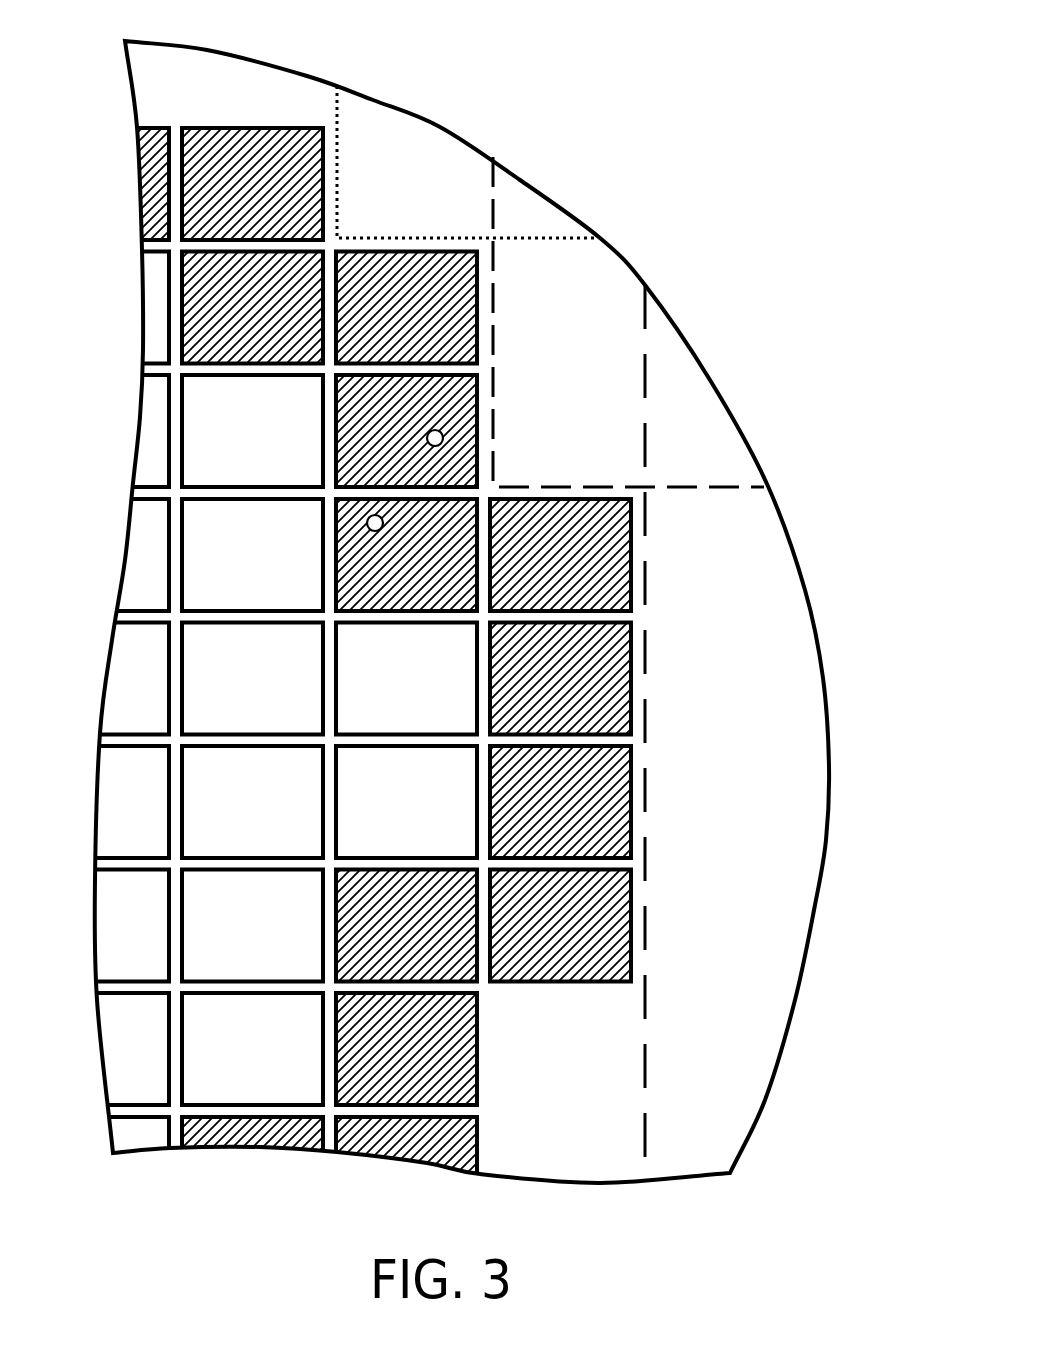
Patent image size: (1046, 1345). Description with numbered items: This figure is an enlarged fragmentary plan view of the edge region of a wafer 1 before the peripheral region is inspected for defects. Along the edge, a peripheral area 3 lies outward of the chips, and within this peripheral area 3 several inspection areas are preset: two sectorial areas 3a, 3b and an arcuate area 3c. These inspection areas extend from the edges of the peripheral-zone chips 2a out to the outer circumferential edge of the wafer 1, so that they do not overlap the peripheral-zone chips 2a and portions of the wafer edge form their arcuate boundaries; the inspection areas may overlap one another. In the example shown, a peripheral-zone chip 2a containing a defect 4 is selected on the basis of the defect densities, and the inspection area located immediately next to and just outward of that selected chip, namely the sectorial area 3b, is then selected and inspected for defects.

The wafer 1 is at (745, 214).
The peripheral-zone chips 2a is at (605, 680).
The peripheral area 3 is at (148, 80).
The sectorial area 3a is at (338, 113).
The sectorial area 3b is at (490, 196).
The arcuate area 3c is at (644, 362).
The defect 4 is at (427, 438).